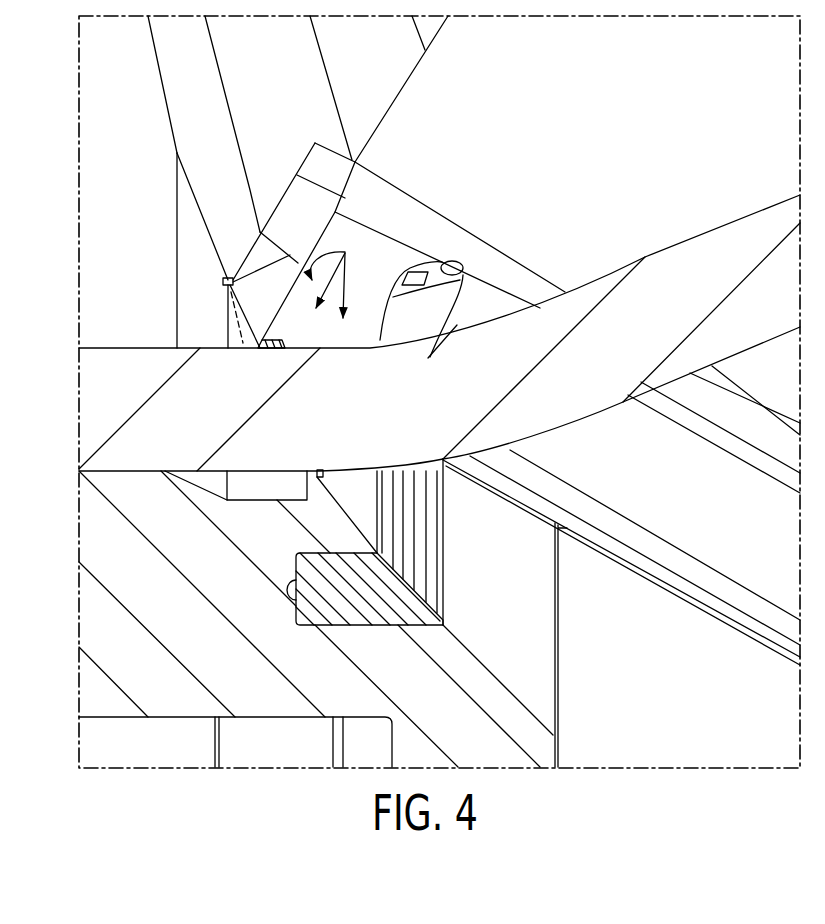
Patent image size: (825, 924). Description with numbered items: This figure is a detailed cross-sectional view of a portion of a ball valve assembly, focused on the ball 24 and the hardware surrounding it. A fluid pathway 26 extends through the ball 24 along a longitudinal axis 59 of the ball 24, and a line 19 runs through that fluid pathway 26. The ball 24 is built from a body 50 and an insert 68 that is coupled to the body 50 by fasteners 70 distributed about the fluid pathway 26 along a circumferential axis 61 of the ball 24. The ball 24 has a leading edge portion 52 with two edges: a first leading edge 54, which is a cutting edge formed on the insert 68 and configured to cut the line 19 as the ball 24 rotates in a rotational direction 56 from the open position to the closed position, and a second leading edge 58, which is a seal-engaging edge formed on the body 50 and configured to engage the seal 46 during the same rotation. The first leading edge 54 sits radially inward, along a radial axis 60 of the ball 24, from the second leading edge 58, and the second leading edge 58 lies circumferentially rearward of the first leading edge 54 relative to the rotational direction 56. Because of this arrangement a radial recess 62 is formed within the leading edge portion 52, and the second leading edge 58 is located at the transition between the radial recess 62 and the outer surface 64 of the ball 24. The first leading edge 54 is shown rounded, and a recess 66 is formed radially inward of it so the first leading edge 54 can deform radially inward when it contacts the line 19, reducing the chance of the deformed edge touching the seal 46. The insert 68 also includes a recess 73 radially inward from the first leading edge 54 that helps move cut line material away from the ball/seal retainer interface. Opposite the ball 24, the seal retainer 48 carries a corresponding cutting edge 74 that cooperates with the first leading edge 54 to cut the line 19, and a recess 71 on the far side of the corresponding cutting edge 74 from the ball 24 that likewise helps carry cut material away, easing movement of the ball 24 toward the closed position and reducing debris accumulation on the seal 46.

The line 19 is at (680, 263).
The ball 24 is at (102, 73).
The fluid pathway 26 is at (486, 120).
The seal 46 is at (430, 548).
The seal retainer 48 is at (497, 683).
The body 50 is at (180, 65).
The leading edge portion 52 is at (150, 337).
The first leading edge 54 is at (260, 350).
The rotational direction 56 is at (107, 203).
The second leading edge 58 is at (220, 287).
The longitudinal axis 59 is at (350, 297).
The radial axis 60 is at (338, 305).
The circumferential axis 61 is at (372, 290).
The radial recess 62 is at (223, 302).
The outer surface 64 is at (190, 212).
The recess 66 is at (278, 350).
The insert 68 is at (377, 212).
The fasteners 70 is at (440, 277).
The recess 71 is at (260, 485).
The recess 73 is at (333, 248).
The corresponding cutting edge 74 is at (320, 470).